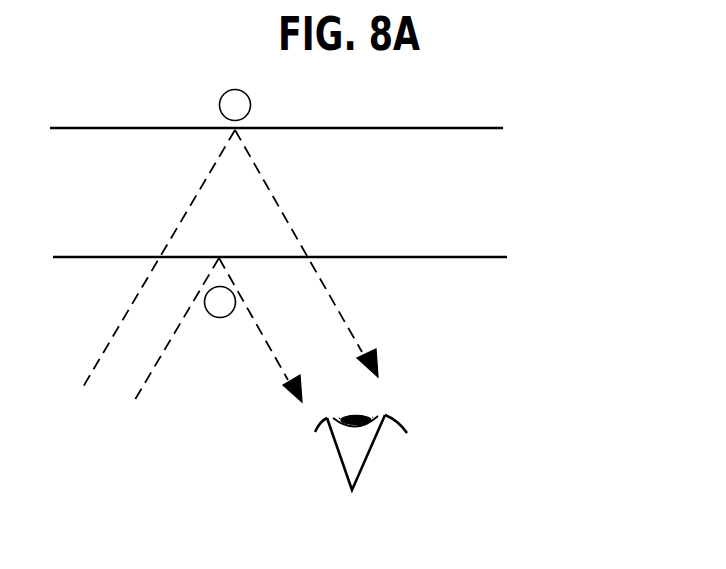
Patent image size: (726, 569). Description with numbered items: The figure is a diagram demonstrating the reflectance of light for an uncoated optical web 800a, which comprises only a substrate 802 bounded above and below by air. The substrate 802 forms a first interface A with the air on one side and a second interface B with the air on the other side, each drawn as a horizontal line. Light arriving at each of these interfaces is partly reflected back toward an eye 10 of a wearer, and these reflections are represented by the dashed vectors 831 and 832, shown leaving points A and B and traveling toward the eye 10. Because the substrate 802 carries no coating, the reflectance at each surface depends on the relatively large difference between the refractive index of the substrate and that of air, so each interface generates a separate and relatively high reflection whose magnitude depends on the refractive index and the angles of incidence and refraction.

The optical web 800a is at (488, 90).
The substrate 802 is at (480, 237).
The vector 832 is at (113, 338).
The vector 831 is at (133, 403).
The eye 10 is at (362, 462).